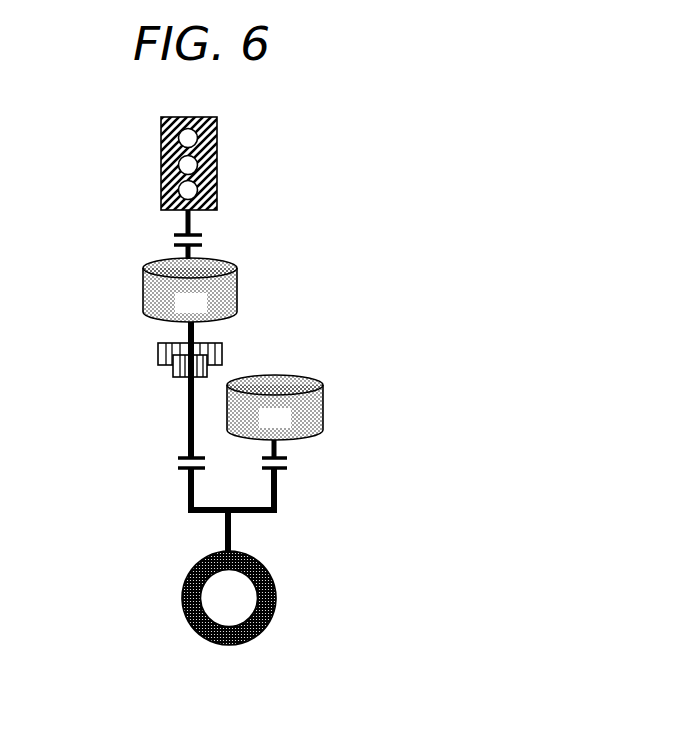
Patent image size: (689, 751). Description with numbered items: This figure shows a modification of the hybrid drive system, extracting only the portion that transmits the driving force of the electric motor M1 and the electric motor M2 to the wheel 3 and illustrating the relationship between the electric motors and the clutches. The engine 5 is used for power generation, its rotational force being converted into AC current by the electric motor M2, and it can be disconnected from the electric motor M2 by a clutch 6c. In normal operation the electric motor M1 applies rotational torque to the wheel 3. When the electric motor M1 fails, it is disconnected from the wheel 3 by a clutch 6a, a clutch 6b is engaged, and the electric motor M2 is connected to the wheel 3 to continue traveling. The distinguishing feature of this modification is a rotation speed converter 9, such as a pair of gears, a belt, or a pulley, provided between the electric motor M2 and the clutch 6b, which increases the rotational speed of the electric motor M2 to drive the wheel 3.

The engine 5 is at (217, 163).
The clutch 6c is at (203, 237).
The electric motor M2 is at (190, 290).
The rotation speed converter 9 is at (157, 360).
The electric motor M1 is at (275, 407).
The clutch 6b is at (178, 469).
The clutch 6a is at (287, 470).
The wheel 3 is at (267, 627).